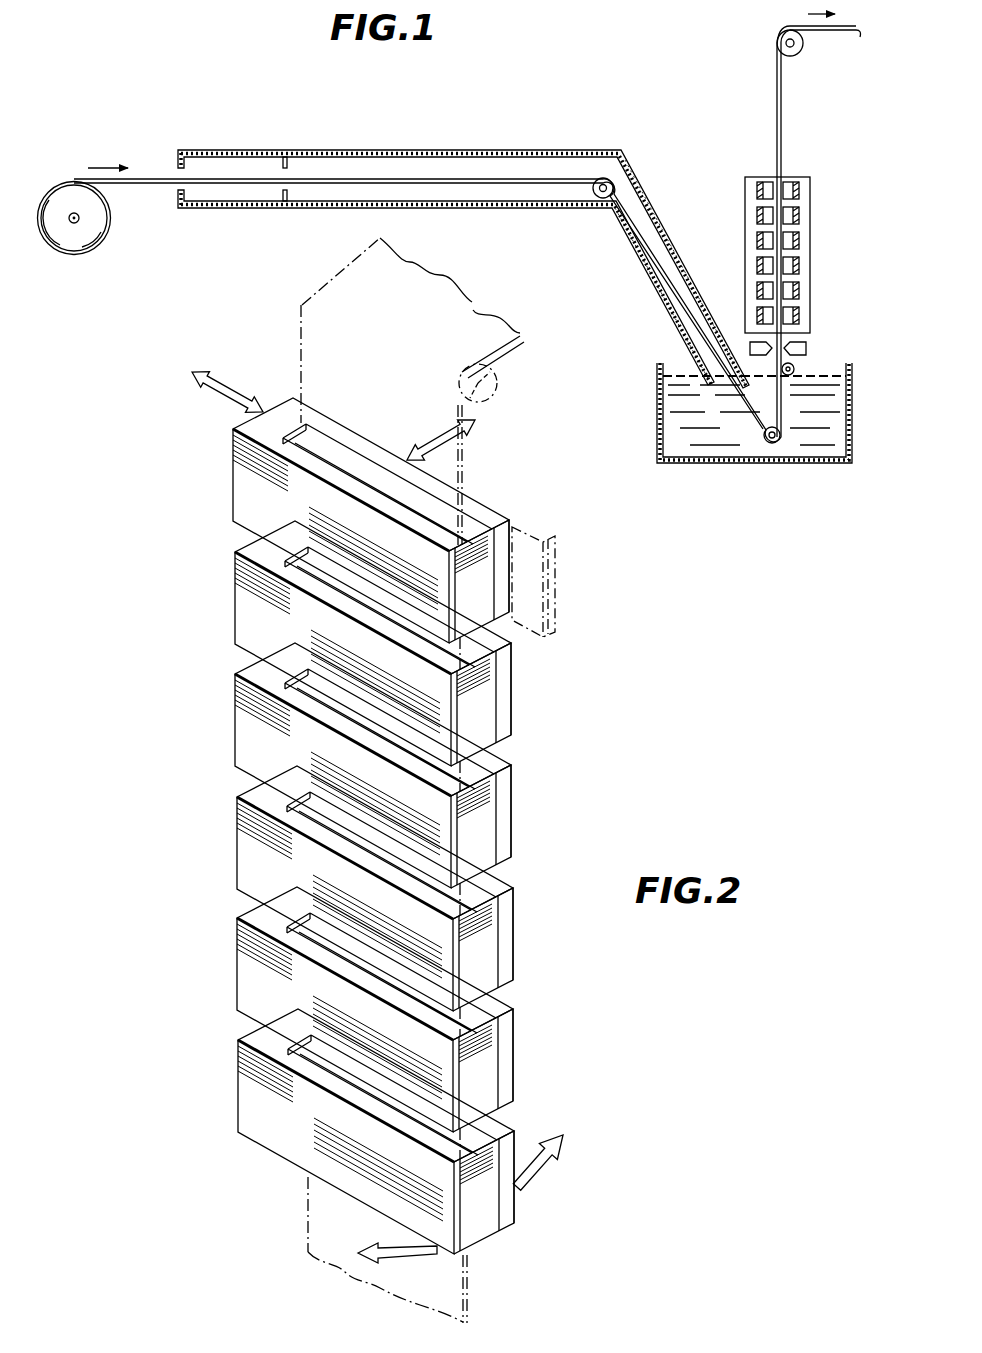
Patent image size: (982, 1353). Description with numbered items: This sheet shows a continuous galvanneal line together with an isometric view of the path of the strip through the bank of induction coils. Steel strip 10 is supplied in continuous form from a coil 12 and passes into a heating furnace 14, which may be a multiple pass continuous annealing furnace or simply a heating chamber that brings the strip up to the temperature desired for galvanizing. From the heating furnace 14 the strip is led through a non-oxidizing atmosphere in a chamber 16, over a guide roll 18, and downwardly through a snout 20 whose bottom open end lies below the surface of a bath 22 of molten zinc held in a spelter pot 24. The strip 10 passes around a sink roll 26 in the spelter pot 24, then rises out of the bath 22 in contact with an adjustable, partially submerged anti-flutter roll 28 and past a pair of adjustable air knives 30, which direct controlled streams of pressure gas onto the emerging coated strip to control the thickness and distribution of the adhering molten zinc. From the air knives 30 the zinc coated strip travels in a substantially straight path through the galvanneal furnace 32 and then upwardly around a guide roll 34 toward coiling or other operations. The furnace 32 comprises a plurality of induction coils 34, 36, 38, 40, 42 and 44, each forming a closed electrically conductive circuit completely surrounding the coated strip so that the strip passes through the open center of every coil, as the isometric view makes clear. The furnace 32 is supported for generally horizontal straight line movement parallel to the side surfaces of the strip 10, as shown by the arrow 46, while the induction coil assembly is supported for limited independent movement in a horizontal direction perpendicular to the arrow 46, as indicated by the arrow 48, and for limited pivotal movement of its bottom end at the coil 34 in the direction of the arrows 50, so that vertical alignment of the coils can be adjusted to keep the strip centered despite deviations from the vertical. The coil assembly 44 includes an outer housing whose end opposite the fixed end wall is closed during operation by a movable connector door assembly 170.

In FIG. 1, the steel strip 10 is at (157, 178).
In FIG. 2, the steel strip 10 is at (474, 302).
In FIG. 1, the coil 12 is at (105, 240).
In FIG. 1, the heating furnace 14 is at (268, 148).
In FIG. 1, the chamber 16 is at (468, 148).
In FIG. 1, the guide roll 18 is at (600, 200).
In FIG. 1, the snout 20 is at (676, 322).
In FIG. 1, the bath 22 is at (836, 438).
In FIG. 1, the spelter pot 24 is at (858, 419).
In FIG. 1, the sink roll 26 is at (775, 446).
In FIG. 1, the anti-flutter roll 28 is at (796, 370).
In FIG. 1, the air knives 30 is at (755, 343).
In FIG. 1, the galvanneal furnace 32 is at (800, 176).
In FIG. 1, the induction coil 34 is at (800, 320).
In FIG. 2, the induction coil 34 is at (232, 1104).
In FIG. 1, the induction coil 36 is at (800, 294).
In FIG. 2, the induction coil 36 is at (232, 990).
In FIG. 1, the induction coil 38 is at (800, 268).
In FIG. 2, the induction coil 38 is at (232, 828).
In FIG. 1, the induction coil 40 is at (800, 242).
In FIG. 2, the induction coil 40 is at (230, 735).
In FIG. 1, the induction coil 42 is at (800, 216).
In FIG. 2, the induction coil 42 is at (230, 598).
In FIG. 1, the induction coil 44 is at (800, 190).
In FIG. 2, the induction coil 44 is at (228, 471).
In FIG. 2, the arrow 46 is at (205, 376).
In FIG. 2, the arrow 48 is at (470, 420).
In FIG. 2, the arrows 50 is at (566, 1158).
In FIG. 2, the connector door assembly 170 is at (500, 545).